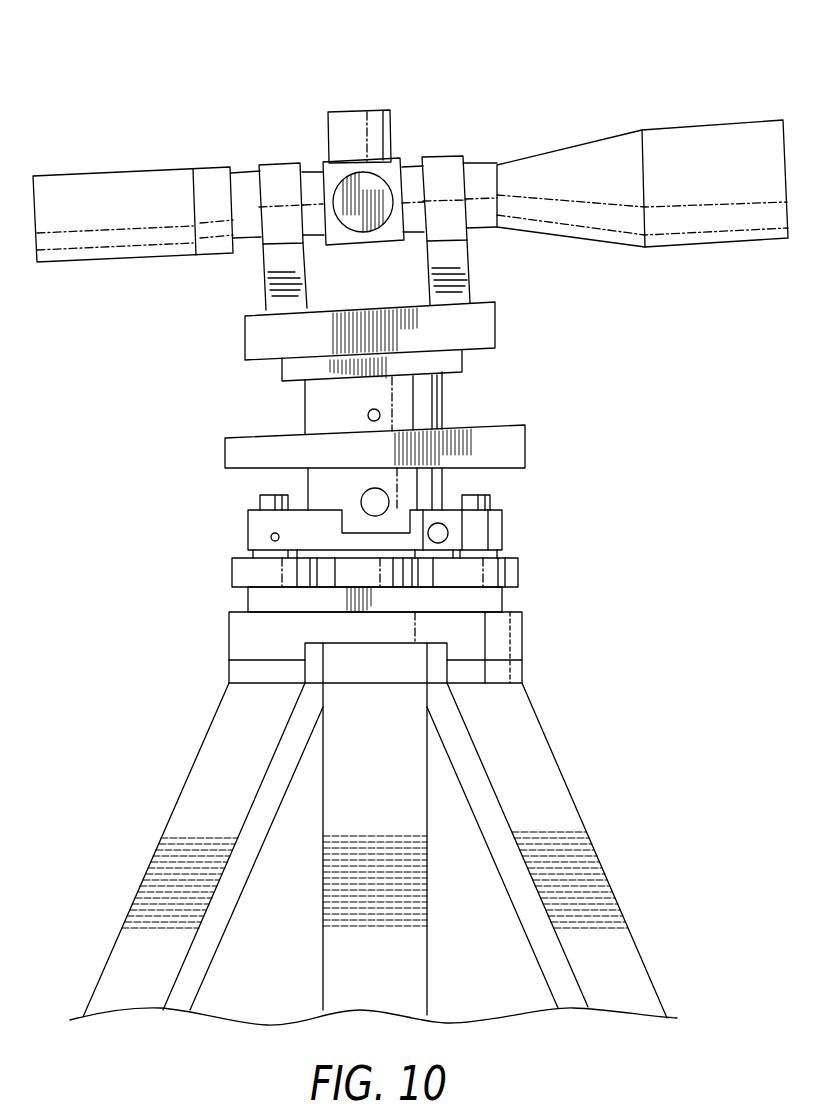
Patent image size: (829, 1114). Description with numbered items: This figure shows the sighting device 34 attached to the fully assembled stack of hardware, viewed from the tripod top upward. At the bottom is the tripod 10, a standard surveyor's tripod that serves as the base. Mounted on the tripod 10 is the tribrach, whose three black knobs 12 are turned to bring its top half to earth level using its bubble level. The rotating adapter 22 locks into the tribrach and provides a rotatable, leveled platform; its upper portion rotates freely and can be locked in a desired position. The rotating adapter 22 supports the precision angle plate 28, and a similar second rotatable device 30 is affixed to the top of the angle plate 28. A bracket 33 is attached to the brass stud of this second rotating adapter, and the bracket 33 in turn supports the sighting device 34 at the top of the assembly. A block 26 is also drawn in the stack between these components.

The tripod 10 is at (607, 883).
The black knobs 12 is at (520, 570).
The rotating adapter 22 is at (445, 487).
The clamp block 26 is at (503, 528).
The precision angle plate 28 is at (525, 445).
The second rotatable device 30 is at (442, 397).
The bracket 33 is at (495, 325).
The sighting device 34 is at (683, 123).